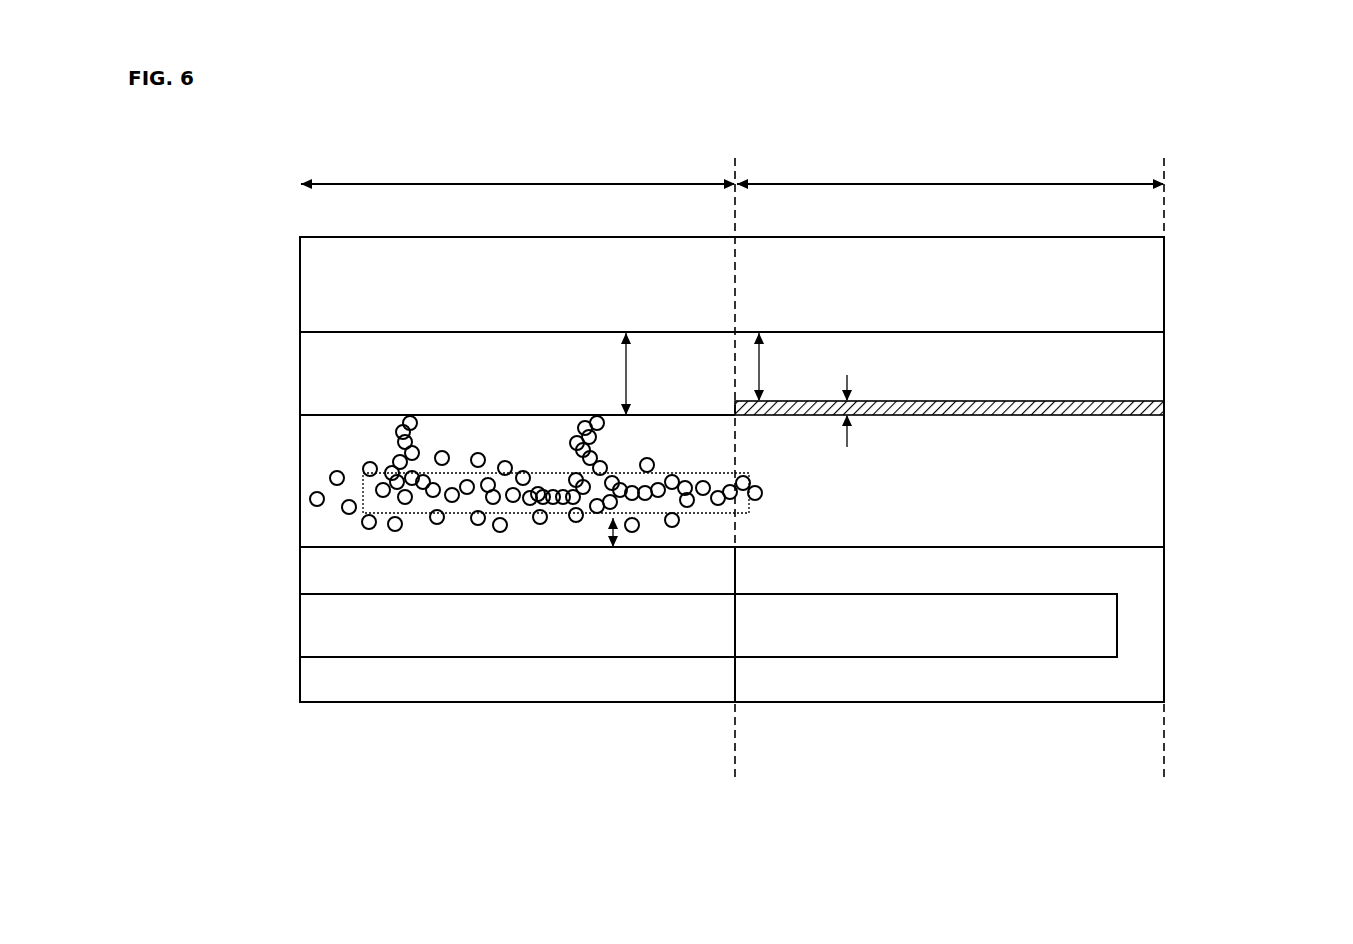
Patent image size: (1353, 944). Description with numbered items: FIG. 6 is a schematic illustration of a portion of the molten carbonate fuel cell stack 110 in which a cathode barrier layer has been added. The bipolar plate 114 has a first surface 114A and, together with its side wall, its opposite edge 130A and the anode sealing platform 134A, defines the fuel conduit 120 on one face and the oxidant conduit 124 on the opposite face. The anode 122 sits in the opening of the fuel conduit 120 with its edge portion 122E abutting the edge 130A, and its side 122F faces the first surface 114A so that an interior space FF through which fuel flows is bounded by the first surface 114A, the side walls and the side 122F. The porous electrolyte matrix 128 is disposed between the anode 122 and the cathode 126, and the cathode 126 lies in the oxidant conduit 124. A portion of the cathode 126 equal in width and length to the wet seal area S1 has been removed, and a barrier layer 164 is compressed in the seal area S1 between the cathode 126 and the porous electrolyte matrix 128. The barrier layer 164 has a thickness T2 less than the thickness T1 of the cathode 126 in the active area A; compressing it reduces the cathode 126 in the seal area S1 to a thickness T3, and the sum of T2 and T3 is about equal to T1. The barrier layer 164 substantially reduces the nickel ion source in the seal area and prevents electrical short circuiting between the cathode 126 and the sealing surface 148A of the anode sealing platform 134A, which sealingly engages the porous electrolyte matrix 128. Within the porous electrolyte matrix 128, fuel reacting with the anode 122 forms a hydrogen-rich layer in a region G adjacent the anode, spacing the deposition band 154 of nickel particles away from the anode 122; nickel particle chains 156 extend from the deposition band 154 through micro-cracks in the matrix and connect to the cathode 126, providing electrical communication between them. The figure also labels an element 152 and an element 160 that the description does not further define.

The MCFC stack 110 is at (1066, 110).
The bipolar plate 114 is at (335, 695).
The first surface 114A is at (325, 657).
The fuel conduit 120 is at (1192, 608).
The anode 122 is at (325, 572).
The edge portion of the anode 122E is at (740, 557).
The side of the anode 122F is at (393, 595).
The oxidant conduit 124 is at (1172, 270).
The cathode 126 is at (455, 350).
The porous electrolyte matrix 128 is at (1100, 445).
The opposite edge of the bipolar plate 130A is at (730, 588).
The anode sealing platform 134A is at (927, 548).
The sealing surface 148A is at (1003, 545).
The particle region 152 is at (400, 462).
The deposition band 154 is at (360, 492).
The nickel particle chains 156 is at (575, 448).
The direction arrow 160 is at (1330, 395).
The barrier layer 164 is at (1165, 408).
The active area A is at (410, 184).
The wet seal area S1 is at (850, 184).
The thickness of the cathode in the active area T1 is at (625, 378).
The thickness of the barrier layer T2 is at (847, 375).
The compressed thickness of the cathode T3 is at (760, 368).
The region of the hydrogen-rich layer G is at (606, 528).
The interior space of the fuel conduit FF is at (468, 641).